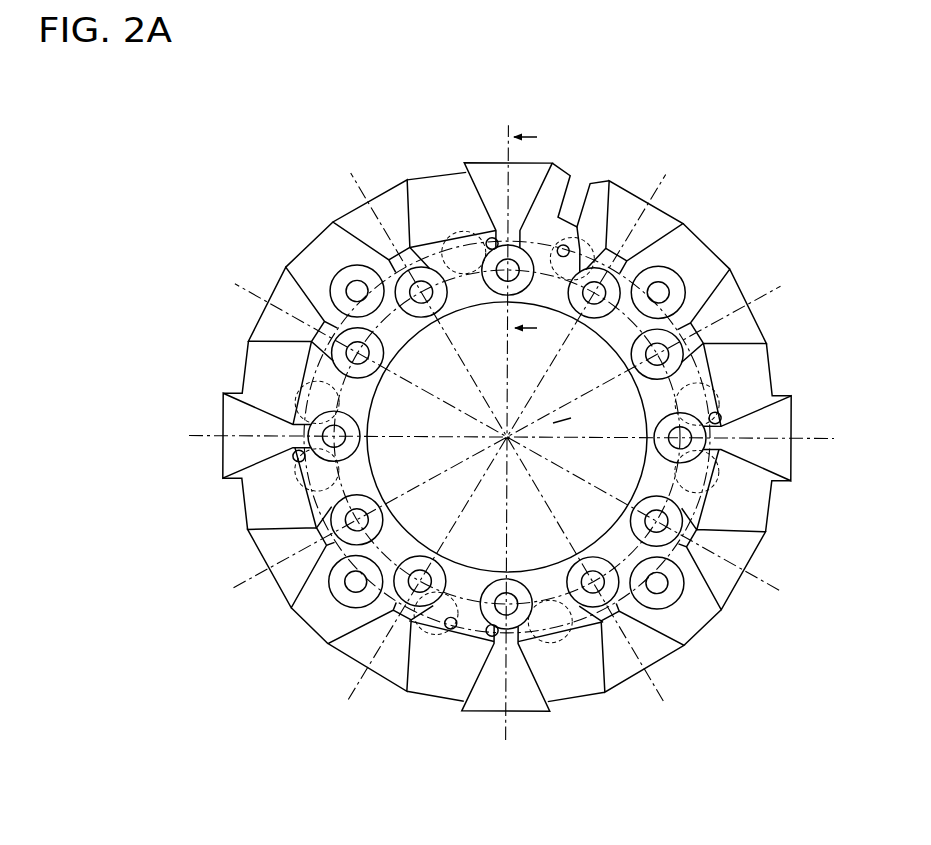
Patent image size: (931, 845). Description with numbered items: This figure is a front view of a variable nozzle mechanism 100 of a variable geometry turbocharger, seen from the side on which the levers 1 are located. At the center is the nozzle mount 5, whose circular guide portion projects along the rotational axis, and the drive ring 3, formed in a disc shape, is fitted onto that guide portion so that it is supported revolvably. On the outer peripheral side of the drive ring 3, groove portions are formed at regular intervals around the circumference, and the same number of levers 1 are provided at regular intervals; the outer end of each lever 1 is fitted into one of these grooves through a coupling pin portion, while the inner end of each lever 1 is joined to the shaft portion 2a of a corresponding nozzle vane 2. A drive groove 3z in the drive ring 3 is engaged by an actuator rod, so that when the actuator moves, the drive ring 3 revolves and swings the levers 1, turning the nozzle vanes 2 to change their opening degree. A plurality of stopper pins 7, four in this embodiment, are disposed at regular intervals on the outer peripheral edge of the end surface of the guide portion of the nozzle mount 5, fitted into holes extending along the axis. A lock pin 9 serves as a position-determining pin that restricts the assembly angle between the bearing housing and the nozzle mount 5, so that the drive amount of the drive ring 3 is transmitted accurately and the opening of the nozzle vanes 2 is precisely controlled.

The variable nozzle mechanism 100 is at (676, 103).
The lever 1 is at (398, 190).
The nozzle vane 2 is at (233, 392).
The shaft portion 2a is at (684, 232).
The drive ring 3 is at (321, 258).
The drive groove 3z is at (577, 198).
The nozzle mount 5 is at (247, 531).
The stopper pin 7 is at (787, 397).
The lock pin 9 is at (627, 245).